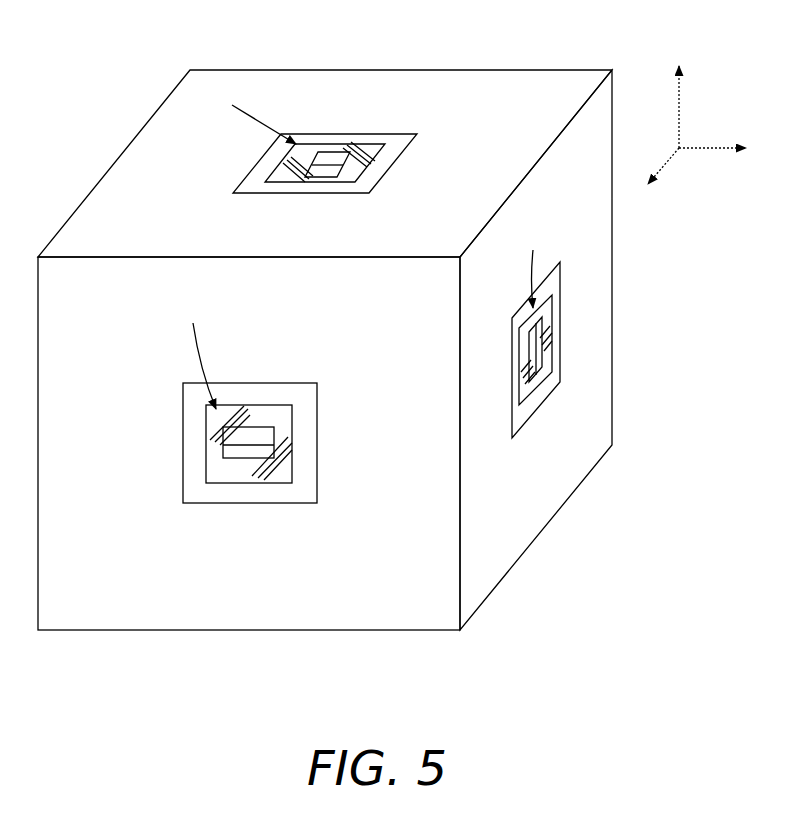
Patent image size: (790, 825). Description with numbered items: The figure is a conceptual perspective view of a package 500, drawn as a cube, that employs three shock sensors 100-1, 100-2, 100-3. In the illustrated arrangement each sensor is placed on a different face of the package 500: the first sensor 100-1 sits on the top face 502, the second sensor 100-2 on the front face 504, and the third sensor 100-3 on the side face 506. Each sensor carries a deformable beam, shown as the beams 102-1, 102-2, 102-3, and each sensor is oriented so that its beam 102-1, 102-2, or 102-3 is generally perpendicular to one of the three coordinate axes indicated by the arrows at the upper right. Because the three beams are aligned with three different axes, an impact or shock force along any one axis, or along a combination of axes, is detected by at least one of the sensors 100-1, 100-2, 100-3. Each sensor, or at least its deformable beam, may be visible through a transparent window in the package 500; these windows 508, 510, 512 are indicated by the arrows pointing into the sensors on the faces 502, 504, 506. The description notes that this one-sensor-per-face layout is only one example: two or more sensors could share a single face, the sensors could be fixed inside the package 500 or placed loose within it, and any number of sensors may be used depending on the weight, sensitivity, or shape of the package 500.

The package 500 is at (325, 355).
The face 502 is at (402, 83).
The face 504 is at (277, 603).
The face 506 is at (498, 552).
The transparent window 508 is at (245, 119).
The transparent window 510 is at (198, 355).
The transparent window 512 is at (536, 267).
The sensor 100-1 is at (319, 163).
The sensor 100-2 is at (250, 442).
The sensor 100-3 is at (597, 350).
The beam 102-1 is at (307, 163).
The beam 102-2 is at (249, 446).
The beam 102-3 is at (545, 355).